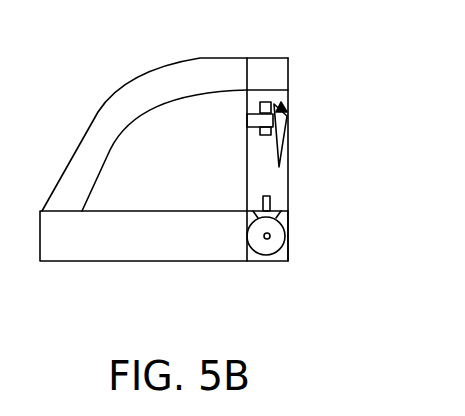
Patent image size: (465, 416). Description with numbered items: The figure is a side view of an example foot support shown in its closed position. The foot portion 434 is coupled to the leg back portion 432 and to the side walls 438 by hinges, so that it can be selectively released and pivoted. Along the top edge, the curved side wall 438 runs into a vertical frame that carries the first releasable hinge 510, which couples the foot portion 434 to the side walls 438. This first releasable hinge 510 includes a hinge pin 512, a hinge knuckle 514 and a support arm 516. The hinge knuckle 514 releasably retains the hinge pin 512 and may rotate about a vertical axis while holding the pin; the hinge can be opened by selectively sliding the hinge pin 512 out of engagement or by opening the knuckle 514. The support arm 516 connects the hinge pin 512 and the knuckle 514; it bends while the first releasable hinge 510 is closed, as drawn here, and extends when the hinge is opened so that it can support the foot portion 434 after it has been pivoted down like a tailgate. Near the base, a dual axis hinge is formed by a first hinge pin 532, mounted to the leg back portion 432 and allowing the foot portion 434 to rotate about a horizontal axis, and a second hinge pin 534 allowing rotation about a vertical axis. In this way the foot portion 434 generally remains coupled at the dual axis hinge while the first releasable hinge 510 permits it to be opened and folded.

The leg back portion 432 is at (72, 262).
The foot portion 434 is at (288, 196).
The side walls 438 is at (200, 58).
The first releasable hinge 510 is at (284, 108).
The hinge pin 512 is at (268, 102).
The hinge knuckle 514 is at (247, 122).
The support arm 516 is at (278, 162).
The first hinge pin 532 is at (270, 236).
The second hinge pin 534 is at (270, 195).